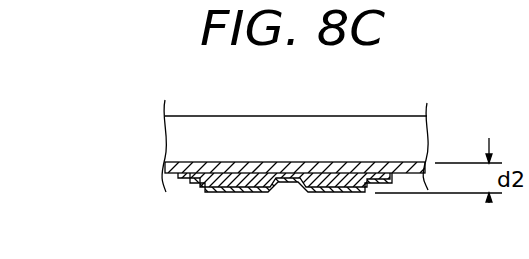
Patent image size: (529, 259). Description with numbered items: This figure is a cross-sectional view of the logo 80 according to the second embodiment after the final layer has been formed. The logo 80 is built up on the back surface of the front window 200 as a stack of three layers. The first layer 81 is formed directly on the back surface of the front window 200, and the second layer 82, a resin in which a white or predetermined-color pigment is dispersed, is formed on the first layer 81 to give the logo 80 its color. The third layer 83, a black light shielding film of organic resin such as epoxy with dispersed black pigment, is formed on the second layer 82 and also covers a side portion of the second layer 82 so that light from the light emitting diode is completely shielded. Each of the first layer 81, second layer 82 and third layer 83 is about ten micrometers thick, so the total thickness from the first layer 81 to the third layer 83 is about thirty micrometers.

The front window 200 is at (197, 134).
The logo 80 is at (72, 143).
The first layer 81 is at (172, 162).
The second layer 82 is at (200, 181).
The third layer 83 is at (205, 191).